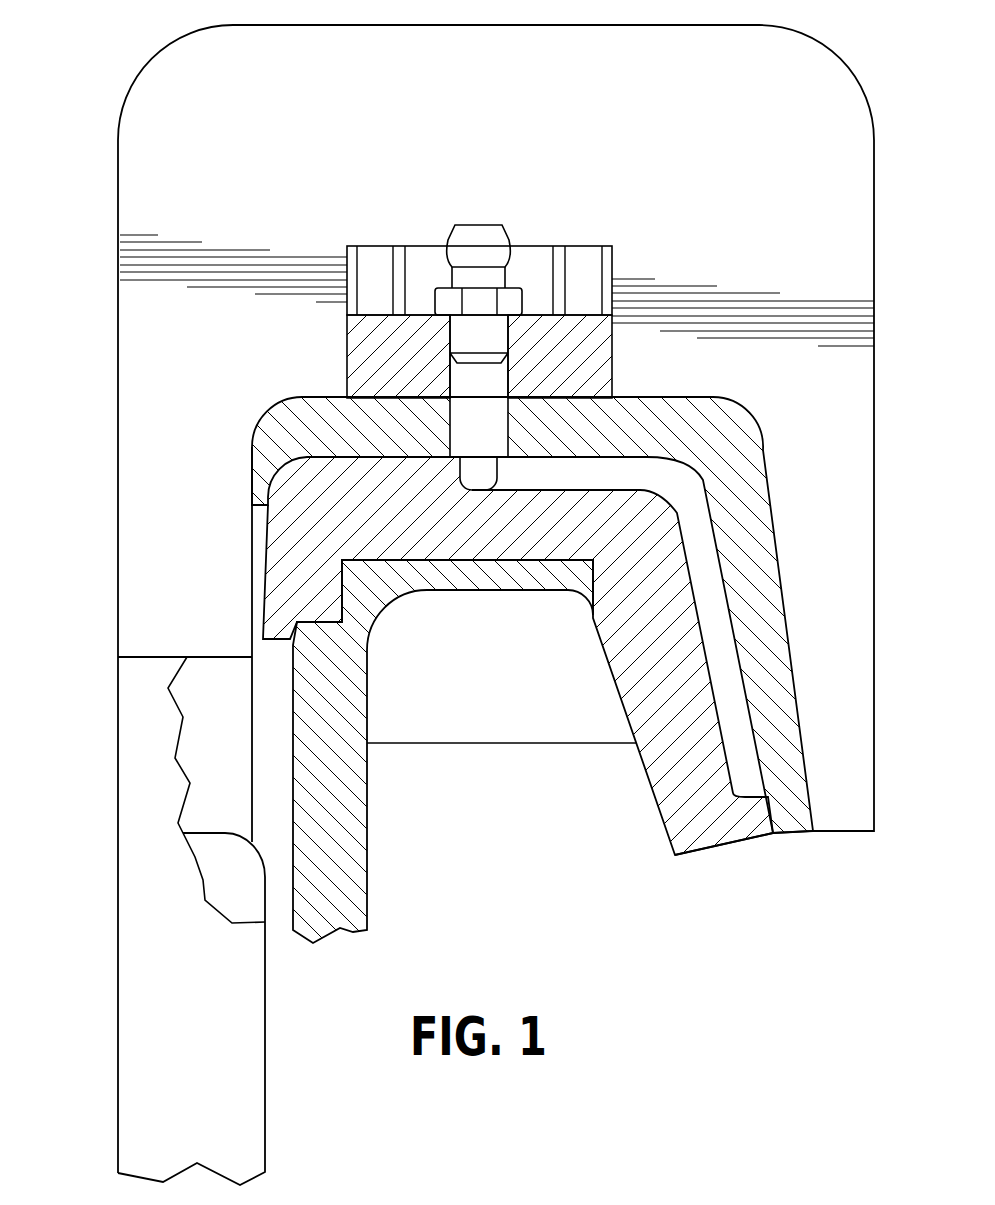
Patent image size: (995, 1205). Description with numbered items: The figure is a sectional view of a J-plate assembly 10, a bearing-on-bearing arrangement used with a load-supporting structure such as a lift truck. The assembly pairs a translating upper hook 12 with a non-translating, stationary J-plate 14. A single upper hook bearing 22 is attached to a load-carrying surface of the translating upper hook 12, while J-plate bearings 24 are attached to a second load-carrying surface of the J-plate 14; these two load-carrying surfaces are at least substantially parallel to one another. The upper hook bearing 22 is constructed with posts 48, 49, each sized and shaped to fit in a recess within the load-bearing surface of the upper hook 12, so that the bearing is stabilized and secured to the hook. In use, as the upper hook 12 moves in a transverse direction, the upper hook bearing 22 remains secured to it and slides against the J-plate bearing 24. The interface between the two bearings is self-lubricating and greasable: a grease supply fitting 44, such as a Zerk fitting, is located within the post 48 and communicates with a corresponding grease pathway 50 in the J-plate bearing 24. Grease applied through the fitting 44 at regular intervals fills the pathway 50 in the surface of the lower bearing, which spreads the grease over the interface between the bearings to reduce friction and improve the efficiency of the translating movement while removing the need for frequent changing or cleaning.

The J-plate assembly 10 is at (105, 901).
The translating upper hook 12 is at (874, 463).
The non-translating J-plate 14 is at (367, 843).
The upper hook bearing 22 is at (745, 398).
The J-plate bearing 24 is at (722, 848).
The grease supply fitting 44 is at (480, 225).
The post 48 is at (612, 362).
The post 49 is at (584, 246).
The grease pathway 50 is at (727, 682).